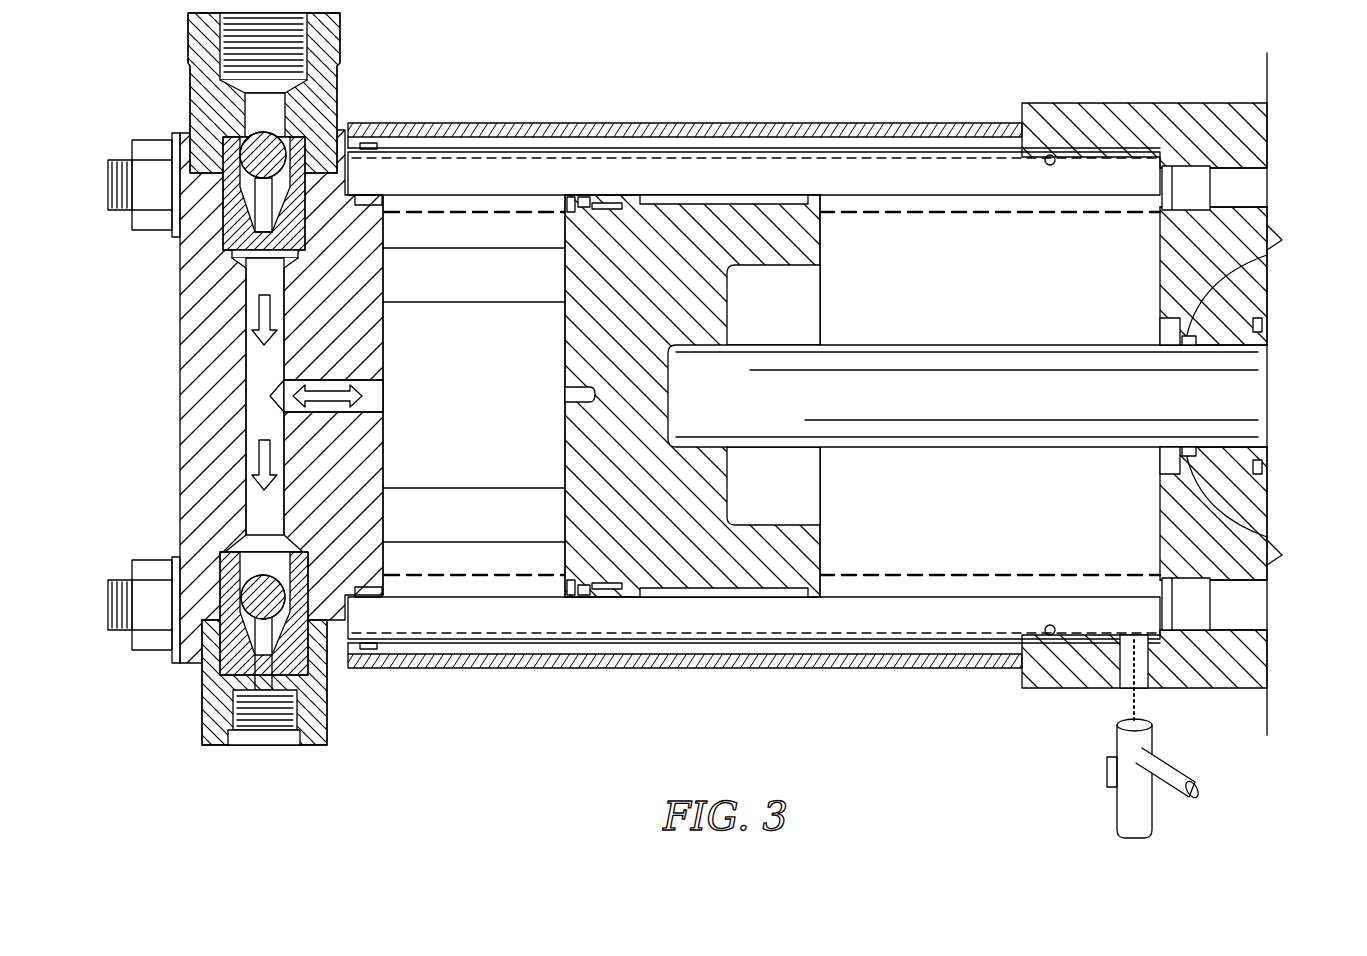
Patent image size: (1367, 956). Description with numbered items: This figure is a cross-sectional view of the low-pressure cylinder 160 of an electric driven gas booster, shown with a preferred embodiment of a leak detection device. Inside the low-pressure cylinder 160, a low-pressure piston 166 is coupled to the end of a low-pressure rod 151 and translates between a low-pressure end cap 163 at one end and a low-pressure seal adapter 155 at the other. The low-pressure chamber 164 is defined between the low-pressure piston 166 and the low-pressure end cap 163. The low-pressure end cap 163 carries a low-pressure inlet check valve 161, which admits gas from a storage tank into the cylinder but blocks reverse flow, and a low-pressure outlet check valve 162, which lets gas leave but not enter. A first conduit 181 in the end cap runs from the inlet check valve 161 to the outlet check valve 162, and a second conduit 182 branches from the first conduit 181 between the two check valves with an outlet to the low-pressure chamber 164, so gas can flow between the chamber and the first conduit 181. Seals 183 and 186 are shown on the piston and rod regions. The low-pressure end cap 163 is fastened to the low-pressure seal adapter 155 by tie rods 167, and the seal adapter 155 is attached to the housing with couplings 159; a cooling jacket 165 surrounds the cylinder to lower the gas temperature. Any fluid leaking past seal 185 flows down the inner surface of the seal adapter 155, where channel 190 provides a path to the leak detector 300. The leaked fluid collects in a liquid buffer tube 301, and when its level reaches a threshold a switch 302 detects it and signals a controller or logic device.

The low-pressure rod 151 is at (1240, 401).
The low-pressure seal adapter 155 is at (1170, 103).
The couplings 159 is at (1267, 185).
The low-pressure cylinder 160 is at (425, 135).
The low-pressure inlet check valve 161 is at (190, 92).
The low-pressure outlet check valve 162 is at (180, 650).
The low-pressure end cap 163 is at (180, 388).
The low-pressure chamber 164 is at (525, 585).
The cooling jacket 165 is at (650, 130).
The low-pressure piston 166 is at (740, 575).
The tie rods 167 is at (760, 158).
The first conduit 181 is at (262, 414).
The second conduit 182 is at (383, 400).
The piston seal 183 is at (578, 197).
The seal 185 is at (1267, 255).
The rod seal 186 is at (1258, 328).
The channel 190 is at (1160, 670).
The leak detector 300 is at (1147, 791).
The liquid buffer tube 301 is at (1132, 838).
The switch 302 is at (1107, 770).